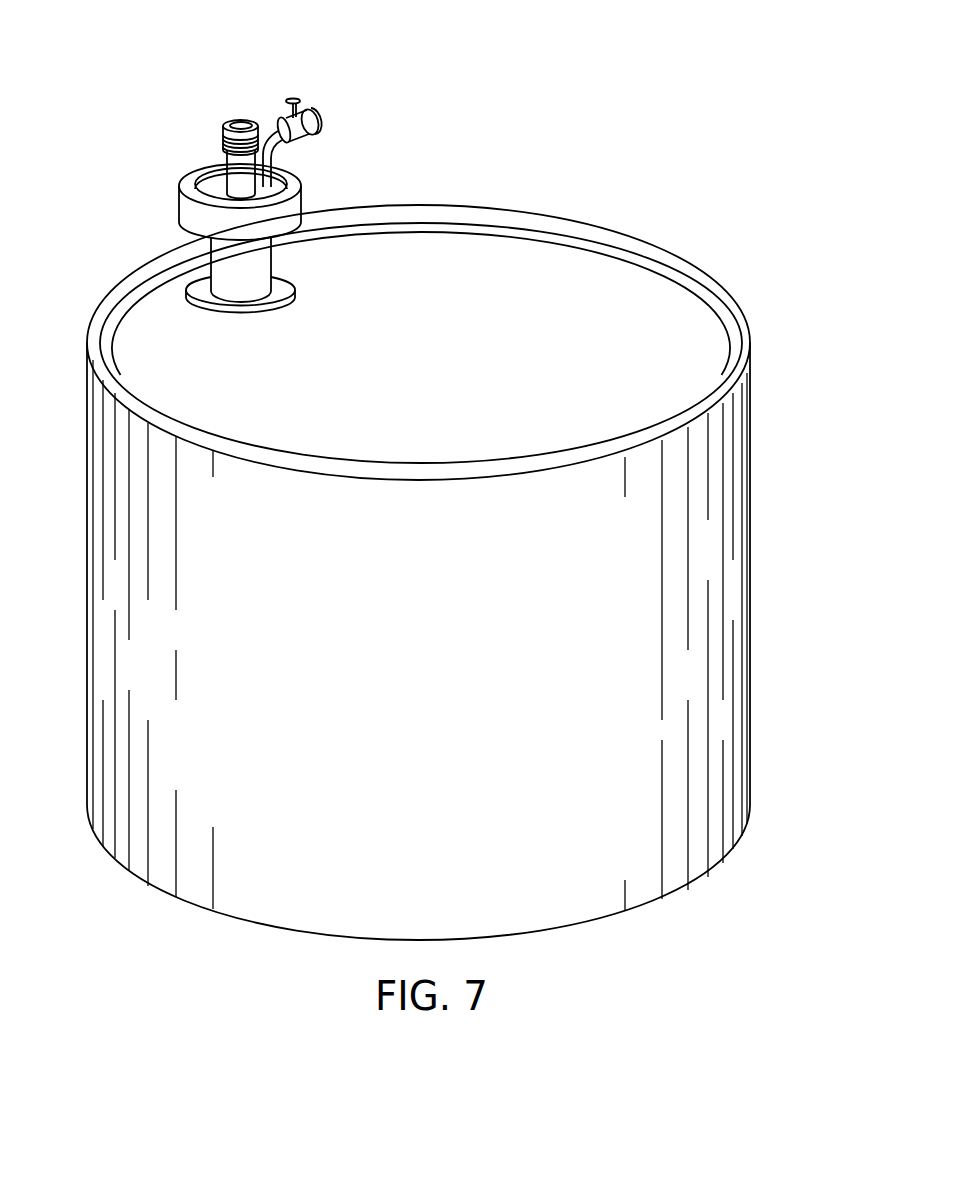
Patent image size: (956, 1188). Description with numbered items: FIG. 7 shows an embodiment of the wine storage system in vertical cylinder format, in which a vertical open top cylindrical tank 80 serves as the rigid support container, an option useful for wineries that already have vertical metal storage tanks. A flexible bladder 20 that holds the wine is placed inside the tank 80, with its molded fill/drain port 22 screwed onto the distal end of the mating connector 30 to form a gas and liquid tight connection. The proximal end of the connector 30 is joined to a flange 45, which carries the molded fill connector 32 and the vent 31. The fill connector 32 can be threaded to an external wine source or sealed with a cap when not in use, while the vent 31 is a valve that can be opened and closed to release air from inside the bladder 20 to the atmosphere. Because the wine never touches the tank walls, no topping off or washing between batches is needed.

The bladder 20 is at (548, 252).
The fill/drain port 22 is at (203, 279).
The connector 30 is at (252, 265).
The vent 31 is at (297, 96).
The fill connector 32 is at (220, 152).
The flange 45 is at (196, 175).
The vertical open top cylindrical tank 80 is at (750, 457).